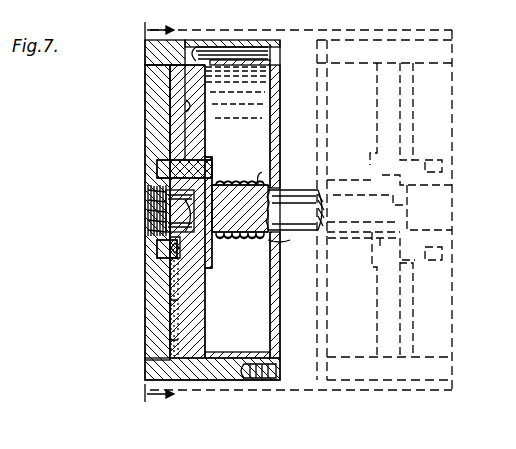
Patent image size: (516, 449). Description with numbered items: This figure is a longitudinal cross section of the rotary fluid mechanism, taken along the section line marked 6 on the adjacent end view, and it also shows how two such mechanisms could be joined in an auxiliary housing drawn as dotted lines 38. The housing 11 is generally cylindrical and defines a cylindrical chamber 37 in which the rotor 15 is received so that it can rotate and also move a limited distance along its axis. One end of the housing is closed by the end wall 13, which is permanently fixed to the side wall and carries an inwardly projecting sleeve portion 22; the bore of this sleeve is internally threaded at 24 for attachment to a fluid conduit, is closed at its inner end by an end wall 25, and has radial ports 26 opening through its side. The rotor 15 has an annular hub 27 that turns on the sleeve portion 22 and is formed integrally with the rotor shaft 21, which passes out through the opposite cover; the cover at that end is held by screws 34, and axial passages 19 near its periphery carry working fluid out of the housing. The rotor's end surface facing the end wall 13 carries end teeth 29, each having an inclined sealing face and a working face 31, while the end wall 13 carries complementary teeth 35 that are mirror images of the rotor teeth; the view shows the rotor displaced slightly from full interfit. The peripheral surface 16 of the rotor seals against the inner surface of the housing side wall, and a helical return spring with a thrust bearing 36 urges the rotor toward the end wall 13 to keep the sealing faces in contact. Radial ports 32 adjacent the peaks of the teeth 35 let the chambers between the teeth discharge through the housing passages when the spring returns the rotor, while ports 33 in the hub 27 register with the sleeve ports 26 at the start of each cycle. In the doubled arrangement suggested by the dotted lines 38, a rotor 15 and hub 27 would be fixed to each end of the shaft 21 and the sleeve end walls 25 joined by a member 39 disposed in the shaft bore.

The section line 6 is at (169, 214).
The housing 11 is at (146, 372).
The end wall 13 is at (145, 90).
The rotor 15 is at (206, 303).
The peripheral surface 16 is at (264, 172).
The axial passages 19 is at (272, 47).
The rotor shaft 21 is at (322, 205).
The sleeve portion 22 is at (166, 243).
The internal threads 24 is at (148, 204).
The end wall 25 is at (215, 238).
The ports 26 is at (160, 250).
The annular hub 27 is at (160, 168).
The end teeth 29 is at (174, 322).
The working face 31 is at (172, 344).
The radial ports 32 is at (198, 52).
The ports 33 is at (176, 258).
The screws 34 is at (275, 366).
The teeth 35 is at (186, 107).
The thrust bearing 36 is at (270, 238).
The chamber 37 is at (247, 159).
The dotted lines 38 is at (410, 392).
The member 39 is at (408, 208).